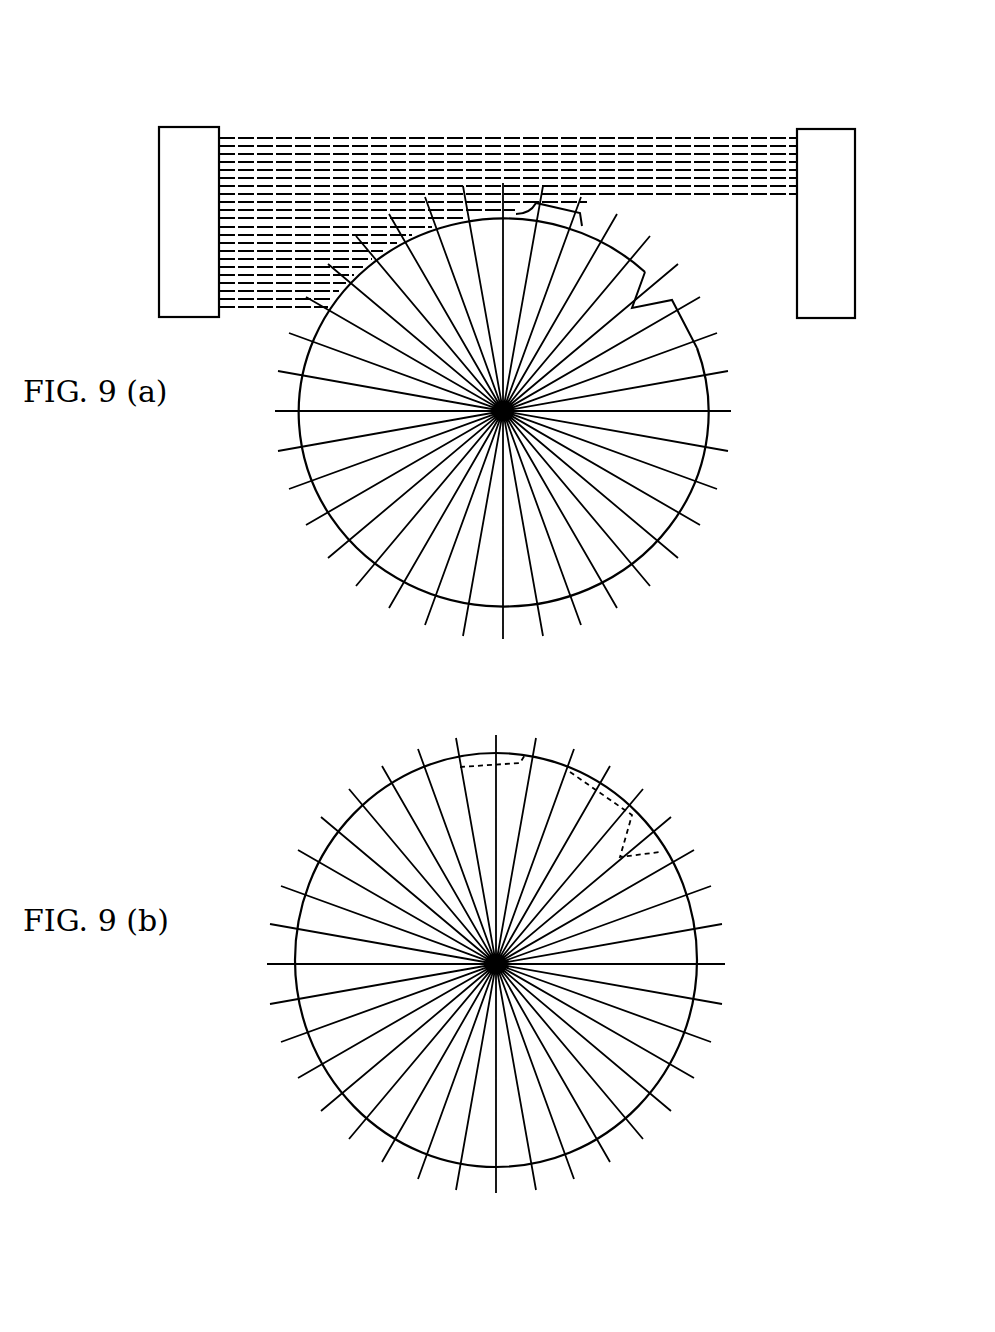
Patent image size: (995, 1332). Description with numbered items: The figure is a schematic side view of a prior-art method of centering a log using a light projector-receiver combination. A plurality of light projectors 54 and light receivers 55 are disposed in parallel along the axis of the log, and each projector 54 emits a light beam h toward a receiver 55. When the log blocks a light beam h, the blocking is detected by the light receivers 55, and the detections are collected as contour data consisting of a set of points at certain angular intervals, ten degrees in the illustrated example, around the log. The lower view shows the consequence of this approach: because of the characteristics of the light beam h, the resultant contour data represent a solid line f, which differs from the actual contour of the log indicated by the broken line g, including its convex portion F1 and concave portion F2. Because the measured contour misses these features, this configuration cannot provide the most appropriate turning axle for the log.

The light projector 54 is at (185, 148).
The light receiver 55 is at (835, 303).
The light beam h is at (596, 138).
The convex portion F1 is at (582, 223).
The concave portion F2 is at (637, 307).
The broken line g is at (520, 758).
The solid line f is at (590, 773).